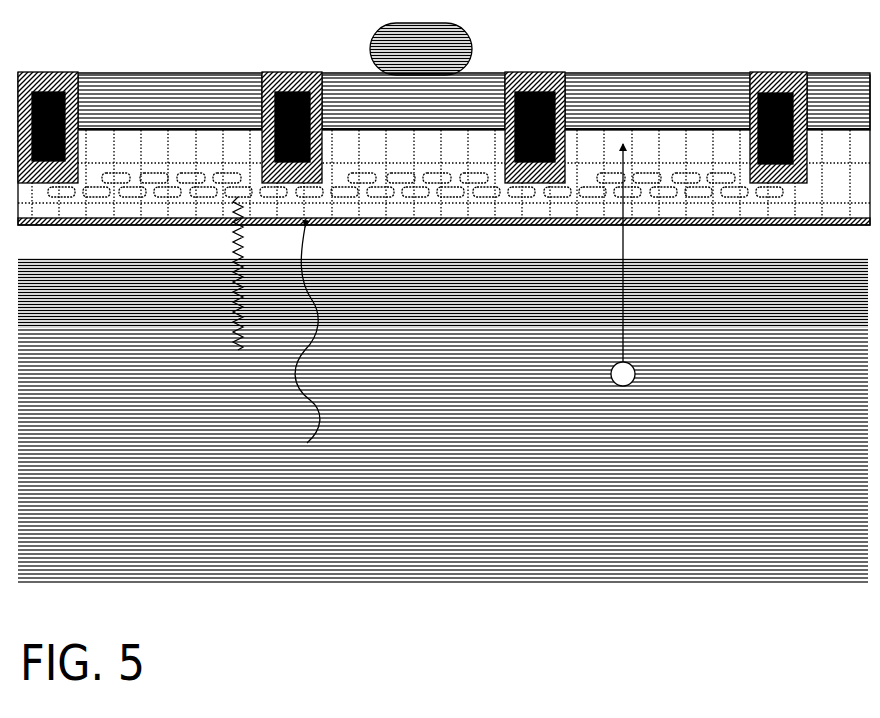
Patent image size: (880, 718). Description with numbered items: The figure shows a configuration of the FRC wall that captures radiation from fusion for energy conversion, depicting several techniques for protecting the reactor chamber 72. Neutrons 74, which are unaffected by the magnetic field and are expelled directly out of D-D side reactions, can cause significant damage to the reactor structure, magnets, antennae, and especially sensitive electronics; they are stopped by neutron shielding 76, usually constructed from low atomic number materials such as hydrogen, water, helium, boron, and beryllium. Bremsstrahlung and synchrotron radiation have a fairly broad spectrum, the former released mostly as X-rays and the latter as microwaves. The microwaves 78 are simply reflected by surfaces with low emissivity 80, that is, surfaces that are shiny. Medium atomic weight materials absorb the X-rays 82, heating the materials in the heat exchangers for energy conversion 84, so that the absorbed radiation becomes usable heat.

The reactor chamber 72 is at (474, 102).
The neutrons 74 is at (636, 363).
The neutron shielding 76 is at (643, 247).
The microwaves 78 is at (316, 346).
The surfaces with low emissivity 80 is at (330, 224).
The X-rays 82 is at (233, 284).
The heat exchangers for energy conversion 84 is at (188, 176).